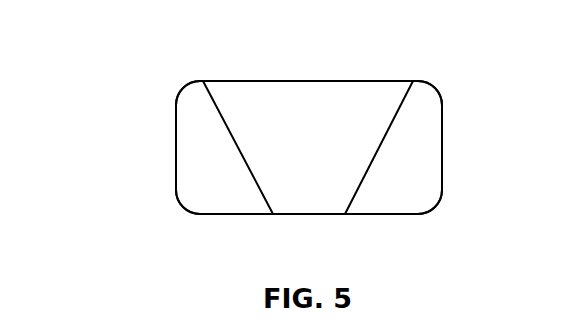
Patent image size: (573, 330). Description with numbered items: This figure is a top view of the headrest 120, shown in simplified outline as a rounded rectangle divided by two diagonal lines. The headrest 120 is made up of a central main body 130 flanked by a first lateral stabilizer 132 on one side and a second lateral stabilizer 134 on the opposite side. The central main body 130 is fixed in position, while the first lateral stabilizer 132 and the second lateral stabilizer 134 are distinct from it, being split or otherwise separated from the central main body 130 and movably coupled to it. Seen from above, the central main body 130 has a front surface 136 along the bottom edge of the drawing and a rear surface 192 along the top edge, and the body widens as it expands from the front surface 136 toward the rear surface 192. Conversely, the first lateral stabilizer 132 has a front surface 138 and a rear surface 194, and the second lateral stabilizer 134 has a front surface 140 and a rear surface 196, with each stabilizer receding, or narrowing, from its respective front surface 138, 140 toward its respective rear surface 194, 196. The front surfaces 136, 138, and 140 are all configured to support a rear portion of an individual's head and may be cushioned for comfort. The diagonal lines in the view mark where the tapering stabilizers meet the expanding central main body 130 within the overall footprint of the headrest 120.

The headrest 120 is at (117, 90).
The central main body 130 is at (308, 98).
The first lateral stabilizer 132 is at (182, 187).
The second lateral stabilizer 134 is at (432, 183).
The front surface 136 is at (307, 215).
The front surface 138 is at (200, 215).
The front surface 140 is at (388, 215).
The rear surface 192 is at (273, 78).
The rear surface 194 is at (189, 85).
The rear surface 196 is at (427, 81).